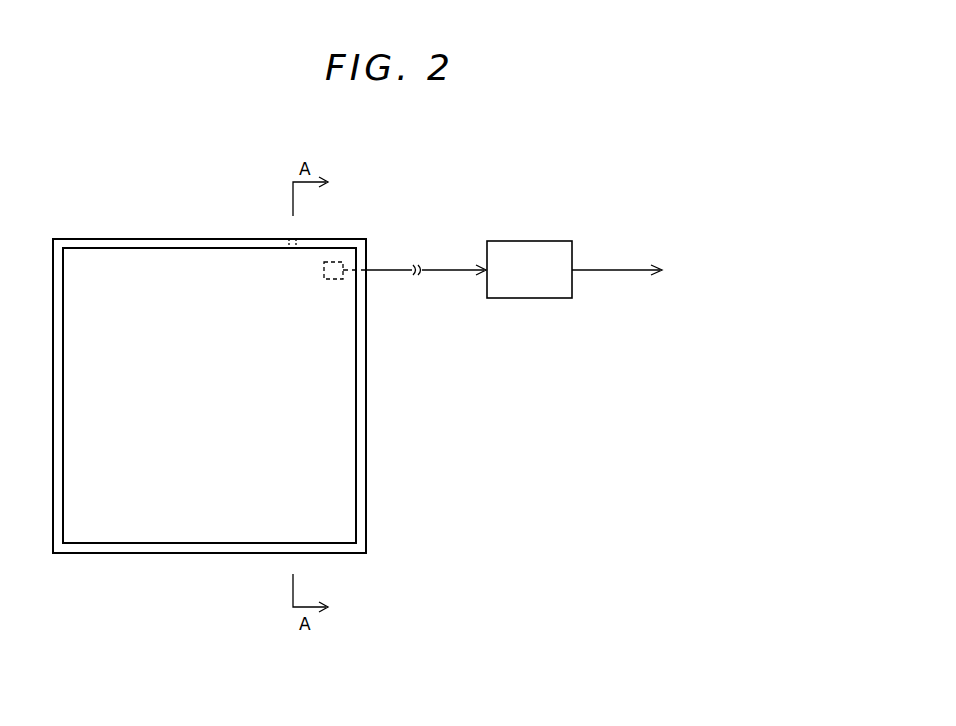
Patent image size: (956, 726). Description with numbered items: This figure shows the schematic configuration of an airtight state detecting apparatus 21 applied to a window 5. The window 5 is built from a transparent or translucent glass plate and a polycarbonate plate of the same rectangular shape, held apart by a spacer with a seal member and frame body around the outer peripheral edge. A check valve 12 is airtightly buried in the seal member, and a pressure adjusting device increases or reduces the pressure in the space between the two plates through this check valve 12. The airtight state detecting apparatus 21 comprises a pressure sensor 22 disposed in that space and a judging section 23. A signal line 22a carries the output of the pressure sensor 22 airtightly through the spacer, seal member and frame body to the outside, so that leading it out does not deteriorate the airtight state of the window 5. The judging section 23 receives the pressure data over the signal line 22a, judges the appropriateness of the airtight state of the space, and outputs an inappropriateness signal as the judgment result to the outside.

The window 5 is at (209, 344).
The check valve 12 is at (292, 242).
The airtight state detecting apparatus 21 is at (567, 305).
The pressure sensor 22 is at (340, 280).
The signal line 22a is at (436, 268).
The judging section 23 is at (528, 299).